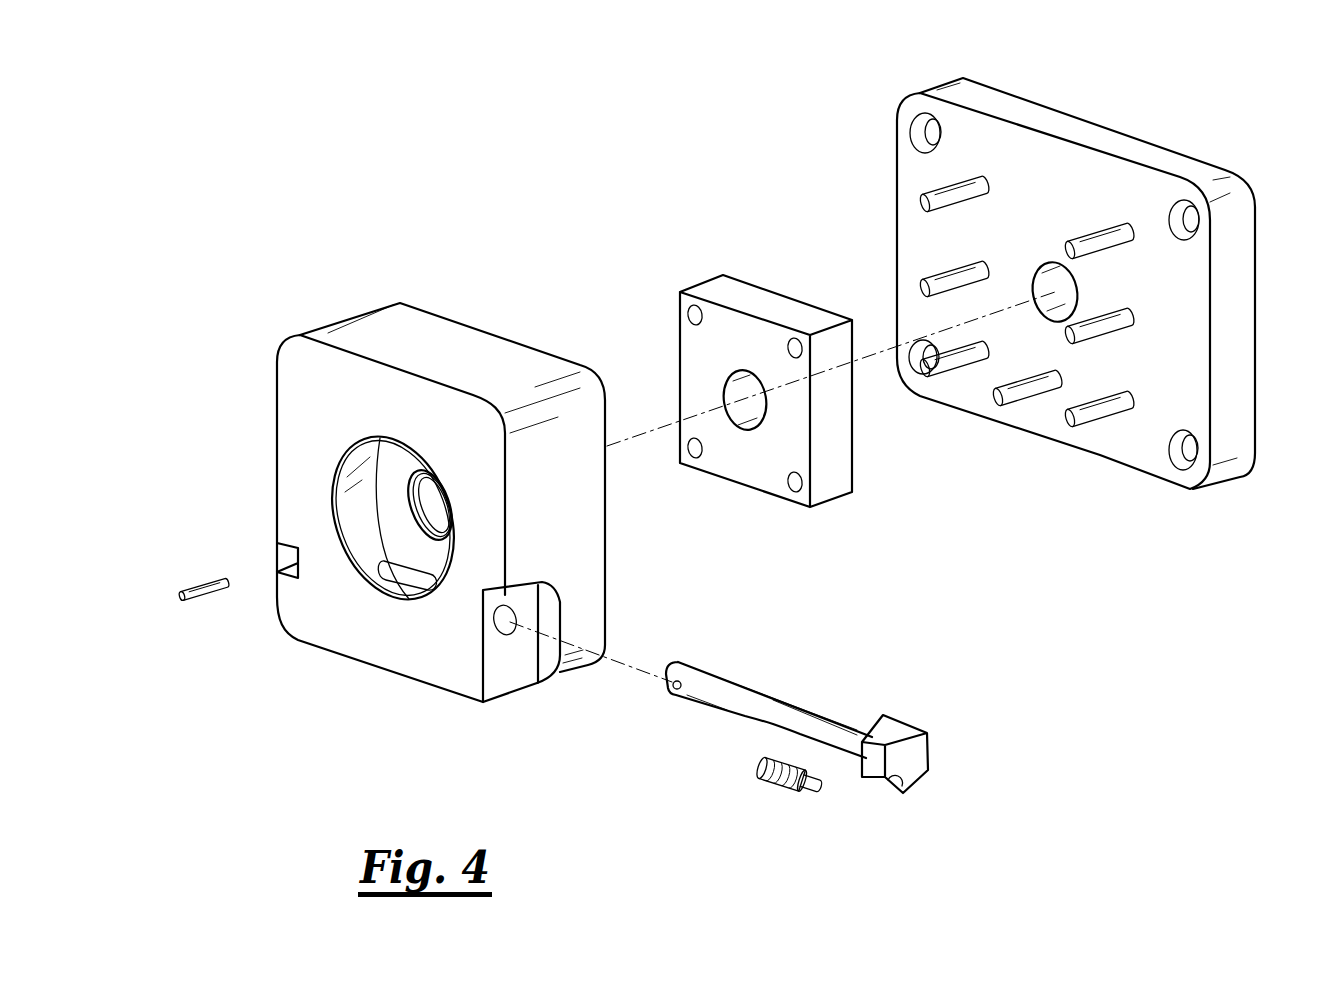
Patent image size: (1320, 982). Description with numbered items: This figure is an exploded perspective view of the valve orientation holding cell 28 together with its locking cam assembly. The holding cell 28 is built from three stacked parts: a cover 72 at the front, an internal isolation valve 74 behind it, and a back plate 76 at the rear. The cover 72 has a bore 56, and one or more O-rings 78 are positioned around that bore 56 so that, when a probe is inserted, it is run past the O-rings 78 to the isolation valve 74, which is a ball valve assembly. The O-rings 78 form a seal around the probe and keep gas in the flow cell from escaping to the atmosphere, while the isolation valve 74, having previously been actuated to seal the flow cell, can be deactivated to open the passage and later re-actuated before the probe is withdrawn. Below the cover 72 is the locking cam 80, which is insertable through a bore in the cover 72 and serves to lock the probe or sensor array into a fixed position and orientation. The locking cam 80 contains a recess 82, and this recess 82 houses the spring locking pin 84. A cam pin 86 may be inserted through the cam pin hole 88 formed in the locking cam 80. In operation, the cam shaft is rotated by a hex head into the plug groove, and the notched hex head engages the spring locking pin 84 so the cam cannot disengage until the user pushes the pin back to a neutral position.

The valve orientation holding cell 28 is at (511, 166).
The bore 56 is at (437, 502).
The cover 72 is at (408, 338).
The internal isolation valve 74 is at (748, 470).
The back plate 76 is at (1085, 137).
The O-rings 78 is at (437, 507).
The locking cam 80 is at (868, 707).
The recess 82 is at (762, 718).
The spring locking pin 84 is at (773, 777).
The cam pin 86 is at (197, 585).
The cam pin hole 88 is at (670, 688).